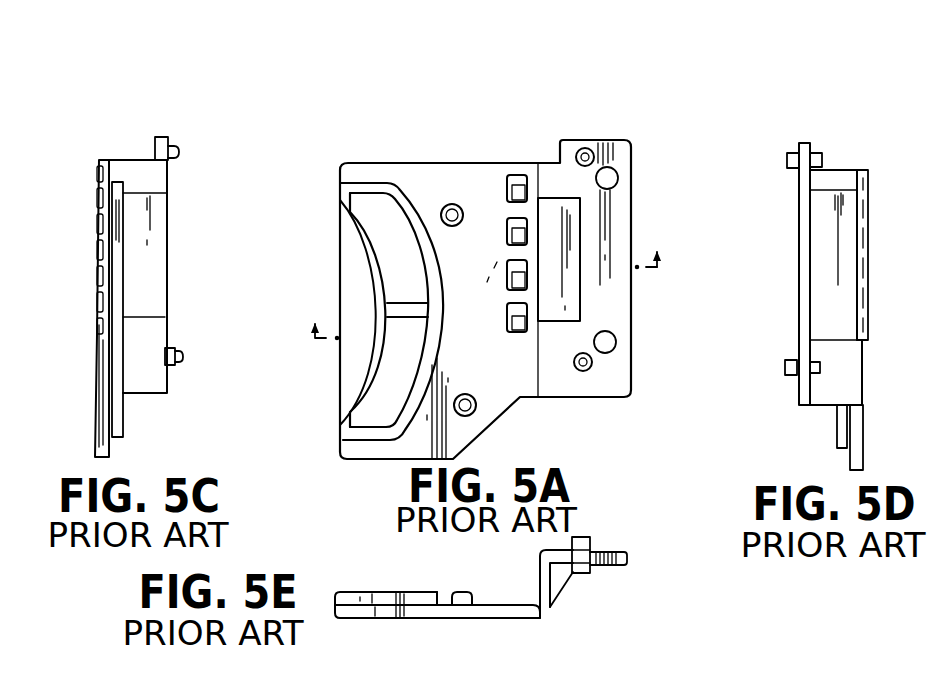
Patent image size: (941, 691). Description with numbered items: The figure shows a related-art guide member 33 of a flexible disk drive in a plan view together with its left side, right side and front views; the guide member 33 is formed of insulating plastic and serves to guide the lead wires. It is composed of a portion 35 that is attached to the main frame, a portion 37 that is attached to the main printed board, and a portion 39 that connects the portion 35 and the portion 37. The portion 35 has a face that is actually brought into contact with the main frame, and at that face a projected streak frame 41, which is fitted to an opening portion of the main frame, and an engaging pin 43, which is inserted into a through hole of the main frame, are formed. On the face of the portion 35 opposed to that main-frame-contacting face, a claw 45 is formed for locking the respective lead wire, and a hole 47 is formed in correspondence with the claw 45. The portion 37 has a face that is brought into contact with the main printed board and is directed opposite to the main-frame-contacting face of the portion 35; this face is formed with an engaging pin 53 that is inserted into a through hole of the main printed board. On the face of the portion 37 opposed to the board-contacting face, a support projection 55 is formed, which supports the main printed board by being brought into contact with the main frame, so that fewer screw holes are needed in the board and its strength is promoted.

In FIG. 5A, the guide member 33 is at (627, 131).
In FIG. 5A, the portion attached to the main frame 35 is at (533, 59).
In FIG. 5A, the portion attached to the main printed board 37 is at (573, 59).
In FIG. 5A, the connecting portion 39 is at (570, 59).
In FIG. 5A, the projected streak frame 41 is at (404, 212).
In FIG. 5C, the projected streak frame 41 is at (116, 424).
In FIG. 5E, the projected streak frame 41 is at (398, 592).
In FIG. 5A, the engaging pin 43 is at (453, 204).
In FIG. 5E, the engaging pin 43 is at (465, 592).
In FIG. 5A, the claw 45 is at (527, 320).
In FIG. 5C, the claw 45 is at (97, 193).
In FIG. 5A, the hole 47 is at (507, 312).
In FIG. 5D, the engaging pin 53 is at (822, 156).
In FIG. 5E, the engaging pin 53 is at (589, 573).
In FIG. 5A, the support projection 55 is at (590, 148).
In FIG. 5C, the support projection 55 is at (178, 146).
In FIG. 5D, the support projection 55 is at (787, 160).
In FIG. 5E, the support projection 55 is at (590, 541).